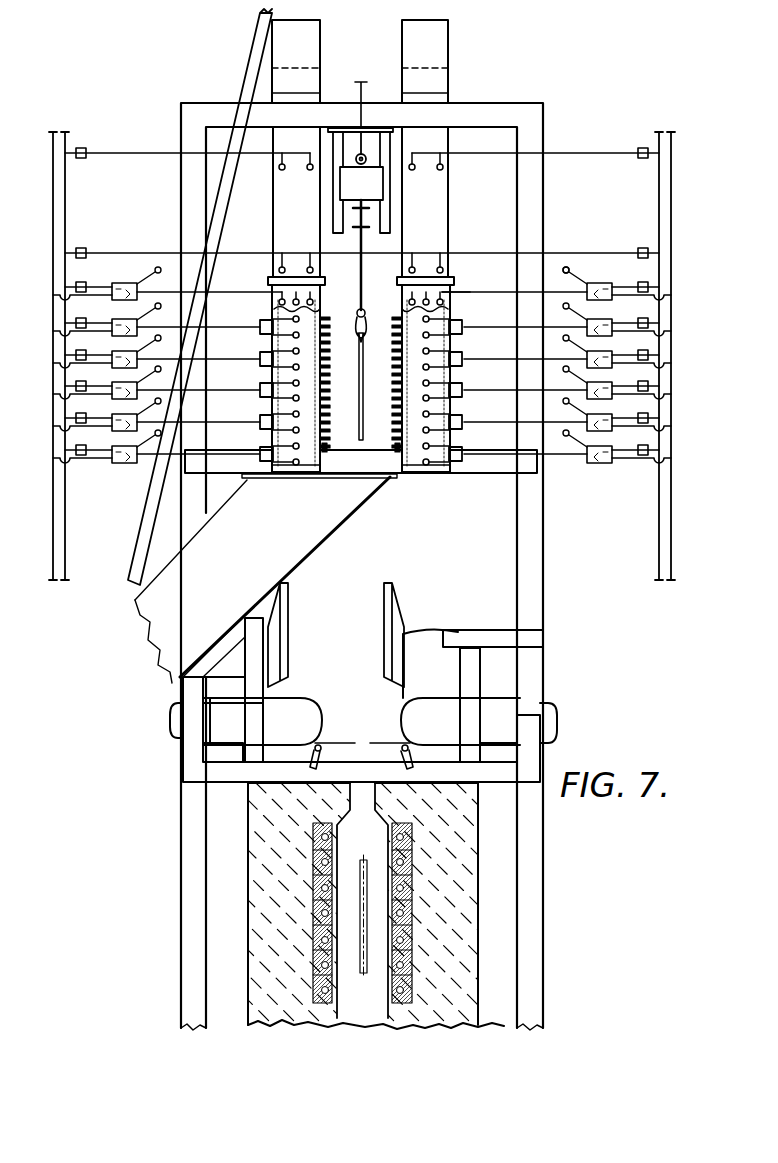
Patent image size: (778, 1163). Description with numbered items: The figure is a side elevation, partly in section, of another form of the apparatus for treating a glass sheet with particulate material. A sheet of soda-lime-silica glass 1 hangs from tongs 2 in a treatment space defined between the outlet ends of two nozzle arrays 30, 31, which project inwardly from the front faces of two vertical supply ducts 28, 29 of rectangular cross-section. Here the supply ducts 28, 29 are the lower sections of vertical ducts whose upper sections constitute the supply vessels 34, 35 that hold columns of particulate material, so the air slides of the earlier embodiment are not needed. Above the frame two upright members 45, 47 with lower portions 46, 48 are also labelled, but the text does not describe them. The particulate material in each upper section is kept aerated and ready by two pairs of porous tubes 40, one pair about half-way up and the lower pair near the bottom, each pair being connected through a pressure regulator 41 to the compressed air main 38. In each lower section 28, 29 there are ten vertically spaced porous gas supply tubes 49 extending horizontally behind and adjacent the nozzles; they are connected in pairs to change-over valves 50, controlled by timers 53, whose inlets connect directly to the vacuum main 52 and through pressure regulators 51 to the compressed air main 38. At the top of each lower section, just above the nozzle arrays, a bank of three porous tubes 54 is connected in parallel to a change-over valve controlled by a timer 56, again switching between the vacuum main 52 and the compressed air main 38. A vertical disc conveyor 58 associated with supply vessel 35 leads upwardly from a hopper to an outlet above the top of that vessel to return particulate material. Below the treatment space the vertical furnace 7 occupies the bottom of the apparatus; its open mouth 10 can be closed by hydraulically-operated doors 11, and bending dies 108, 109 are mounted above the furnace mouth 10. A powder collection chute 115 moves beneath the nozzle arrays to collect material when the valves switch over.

The sheet of soda-lime-silica glass 1 is at (358, 407).
The tongs 2 is at (358, 311).
The vertical furnace 7 is at (467, 867).
The open mouth 10 is at (360, 800).
The hydraulically-operated doors 11 is at (336, 743).
The vertical supply duct 28 is at (453, 405).
The vertical supply duct 29 is at (270, 433).
The nozzles 30 is at (397, 477).
The nozzles 31 is at (327, 443).
The vertical supply vessel 34 is at (443, 140).
The vertical supply vessel 35 is at (280, 100).
The compressed air main 38 is at (658, 195).
The porous tubes 40 is at (410, 267).
The pressure regulator 41 is at (641, 251).
The pillar 45 is at (433, 67).
The collar 46 is at (433, 92).
The pillar 47 is at (297, 68).
The collar 48 is at (303, 90).
The porous gas supply tubes 49 is at (427, 472).
The change-over valve 50 is at (598, 465).
The pressure regulator 51 is at (643, 456).
The vacuum main 52 is at (673, 169).
The timer 53 is at (602, 282).
The porous tube 54 is at (447, 302).
The timer 56 is at (563, 268).
The vertical disc conveyor 58 is at (155, 492).
The bending die 108 is at (390, 593).
The bending die 109 is at (277, 583).
The powder collection chute 115 is at (262, 580).